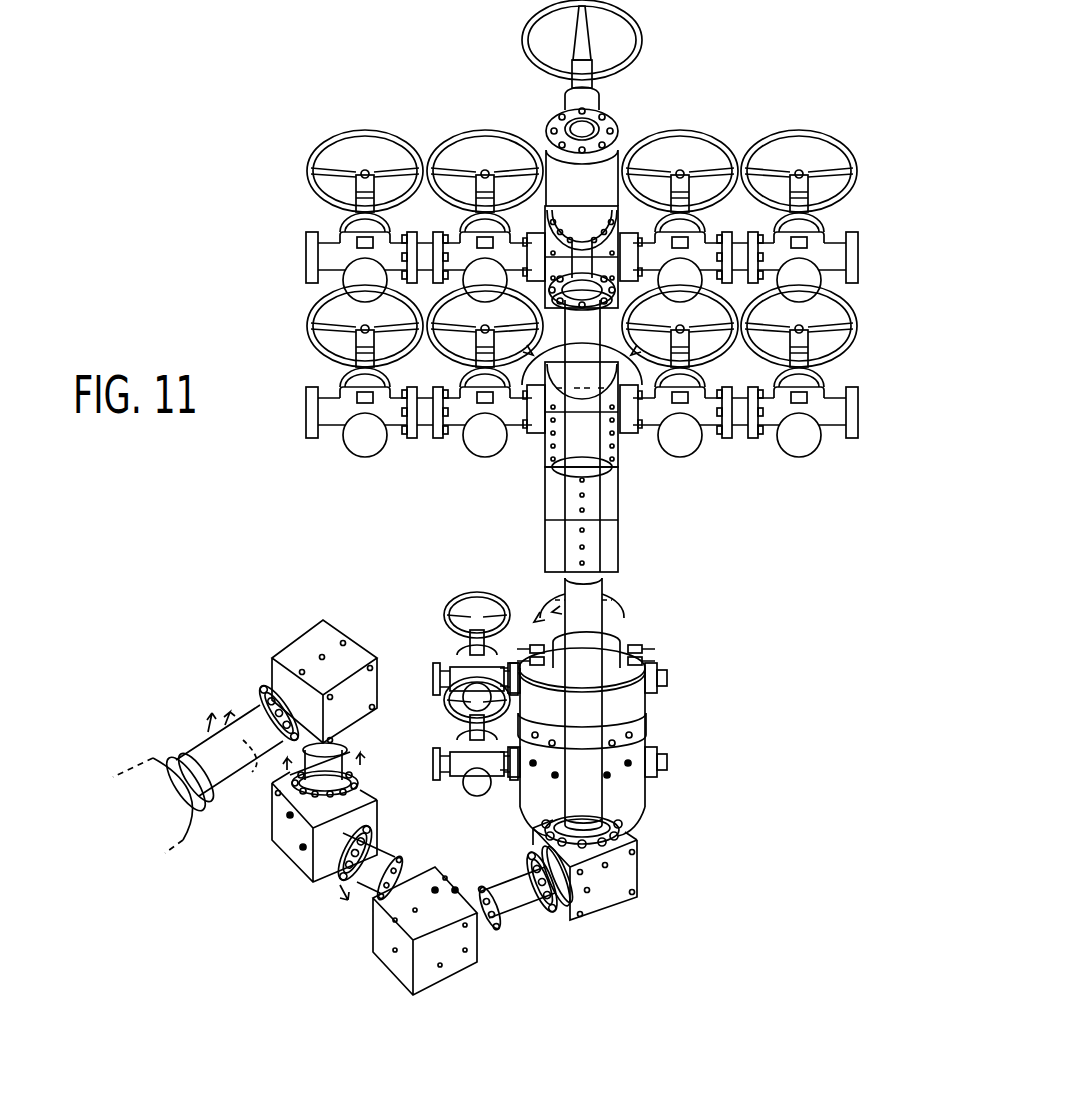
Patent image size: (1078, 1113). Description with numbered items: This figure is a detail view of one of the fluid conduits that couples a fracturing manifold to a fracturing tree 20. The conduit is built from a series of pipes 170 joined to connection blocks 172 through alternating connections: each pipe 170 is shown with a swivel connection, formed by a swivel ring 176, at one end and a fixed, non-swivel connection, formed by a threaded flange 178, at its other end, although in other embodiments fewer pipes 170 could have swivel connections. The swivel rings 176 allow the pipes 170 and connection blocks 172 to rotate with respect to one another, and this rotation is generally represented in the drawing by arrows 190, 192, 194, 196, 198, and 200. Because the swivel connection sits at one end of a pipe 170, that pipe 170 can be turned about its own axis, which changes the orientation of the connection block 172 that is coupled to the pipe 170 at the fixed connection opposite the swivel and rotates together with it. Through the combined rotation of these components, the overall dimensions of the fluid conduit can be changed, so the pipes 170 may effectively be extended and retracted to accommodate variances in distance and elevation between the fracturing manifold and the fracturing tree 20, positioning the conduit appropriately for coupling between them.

The fracturing tree 20 is at (600, 175).
The pipe 170 is at (582, 438).
The connection block 172 is at (598, 507).
The swivel ring 176 is at (547, 272).
The threaded flange 178 is at (587, 462).
The arrow 190 is at (628, 348).
The arrow 192 is at (600, 628).
The arrow 194 is at (537, 905).
The arrow 196 is at (312, 908).
The arrow 198 is at (313, 828).
The arrow 200 is at (242, 735).